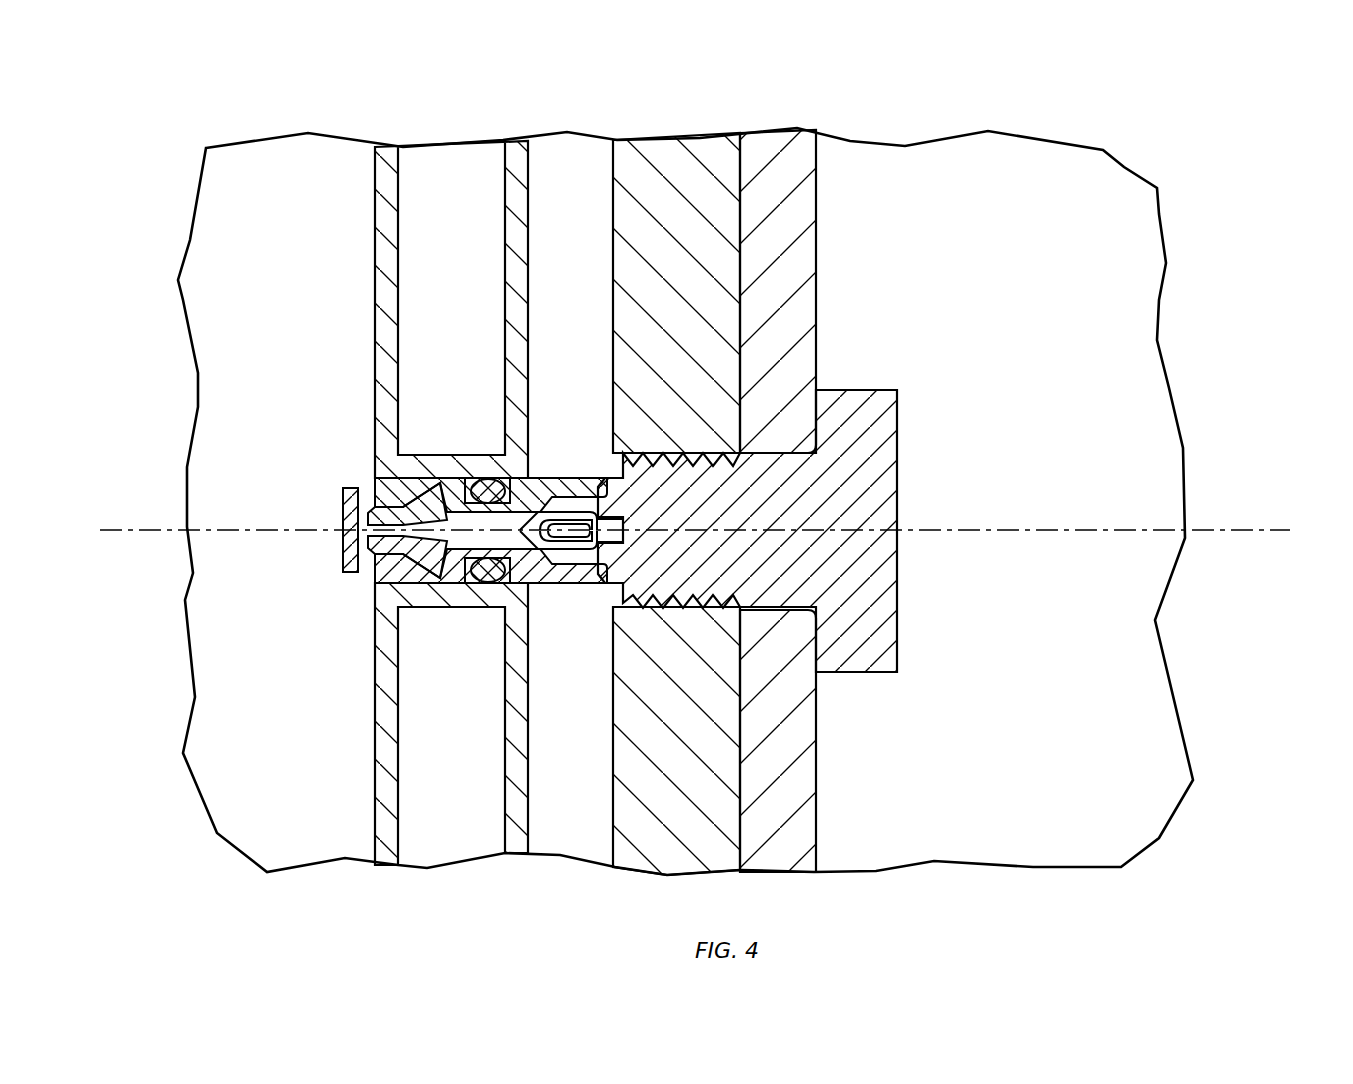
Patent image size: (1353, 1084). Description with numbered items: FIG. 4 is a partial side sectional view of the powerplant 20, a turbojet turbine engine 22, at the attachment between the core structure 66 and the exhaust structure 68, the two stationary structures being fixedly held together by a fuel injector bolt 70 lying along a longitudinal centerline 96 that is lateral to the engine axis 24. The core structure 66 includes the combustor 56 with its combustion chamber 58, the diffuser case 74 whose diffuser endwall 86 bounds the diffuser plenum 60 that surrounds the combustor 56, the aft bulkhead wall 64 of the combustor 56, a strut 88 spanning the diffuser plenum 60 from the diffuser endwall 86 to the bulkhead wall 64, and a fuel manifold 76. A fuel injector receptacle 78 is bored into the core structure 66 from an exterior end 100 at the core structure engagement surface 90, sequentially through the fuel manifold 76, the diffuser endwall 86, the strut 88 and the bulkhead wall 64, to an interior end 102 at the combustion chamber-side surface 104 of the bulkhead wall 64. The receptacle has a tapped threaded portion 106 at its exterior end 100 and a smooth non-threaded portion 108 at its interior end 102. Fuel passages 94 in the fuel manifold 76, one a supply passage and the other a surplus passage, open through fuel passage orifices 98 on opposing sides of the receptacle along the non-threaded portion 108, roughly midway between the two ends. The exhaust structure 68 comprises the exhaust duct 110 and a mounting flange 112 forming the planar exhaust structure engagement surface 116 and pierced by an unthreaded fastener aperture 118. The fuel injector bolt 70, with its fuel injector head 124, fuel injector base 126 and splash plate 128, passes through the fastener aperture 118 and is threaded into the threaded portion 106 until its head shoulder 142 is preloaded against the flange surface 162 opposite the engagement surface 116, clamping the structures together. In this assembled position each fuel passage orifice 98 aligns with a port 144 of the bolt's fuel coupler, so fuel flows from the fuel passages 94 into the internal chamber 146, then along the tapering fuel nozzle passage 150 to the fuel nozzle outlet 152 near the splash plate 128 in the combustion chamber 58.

The powerplant 20 is at (739, 457).
The turbine engine 22 is at (1185, 90).
The axis 24 is at (1240, 540).
The combustor 56 is at (407, 160).
The combustion chamber 58 is at (237, 361).
The diffuser plenum 60 is at (432, 298).
The bulkhead wall 64 is at (375, 250).
The core structure 66 is at (700, 122).
The exhaust structure 68 is at (945, 122).
The fuel injector bolt 70 is at (915, 413).
The diffuser case 74 is at (515, 140).
The fuel manifold 76 is at (645, 125).
The fuel injector receptacle 78 is at (680, 445).
The diffuser endwall 86 is at (500, 172).
The strut 88 is at (446, 590).
The core structure engagement surface 90 is at (741, 194).
The fuel passage 94 is at (555, 263).
The longitudinal centerline 96 is at (985, 537).
The fuel passage orifice 98 is at (577, 485).
The exterior end 100 is at (690, 593).
The interior end 102 is at (375, 583).
The combustion chamber-side surface 104 is at (375, 733).
The threaded portion 106 is at (720, 595).
The non-threaded portion 108 is at (410, 577).
The exhaust duct 110 is at (965, 862).
The mounting flange 112 is at (787, 865).
The exhaust structure engagement surface 116 is at (740, 202).
The fastener aperture 118 is at (780, 450).
The fuel injector head 124 is at (902, 390).
The fuel injector base 126 is at (800, 450).
The splash plate 128 is at (335, 495).
The head shoulder 142 is at (818, 672).
The port 144 is at (553, 507).
The internal chamber 146 is at (533, 562).
The fuel nozzle passage 150 is at (448, 513).
The fuel nozzle outlet 152 is at (368, 530).
The mounting flange surface 162 is at (817, 750).